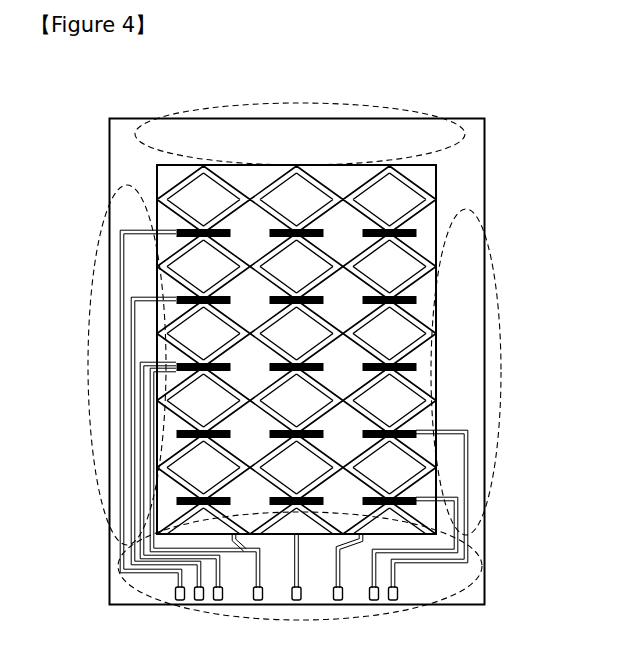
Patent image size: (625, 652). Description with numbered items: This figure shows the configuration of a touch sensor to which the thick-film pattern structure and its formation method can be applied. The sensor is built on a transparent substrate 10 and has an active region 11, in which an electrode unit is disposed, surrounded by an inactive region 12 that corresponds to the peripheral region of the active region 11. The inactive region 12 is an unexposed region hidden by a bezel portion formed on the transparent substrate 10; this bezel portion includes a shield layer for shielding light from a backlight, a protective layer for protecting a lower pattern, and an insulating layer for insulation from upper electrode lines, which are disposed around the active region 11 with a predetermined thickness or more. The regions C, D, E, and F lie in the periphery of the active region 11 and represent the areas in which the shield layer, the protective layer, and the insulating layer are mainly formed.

The transparent substrate 10 is at (503, 138).
The active region 11 is at (204, 199).
The inactive region 12 is at (128, 174).
The region C is at (90, 381).
The region D is at (386, 615).
The region E is at (501, 335).
The region F is at (297, 103).